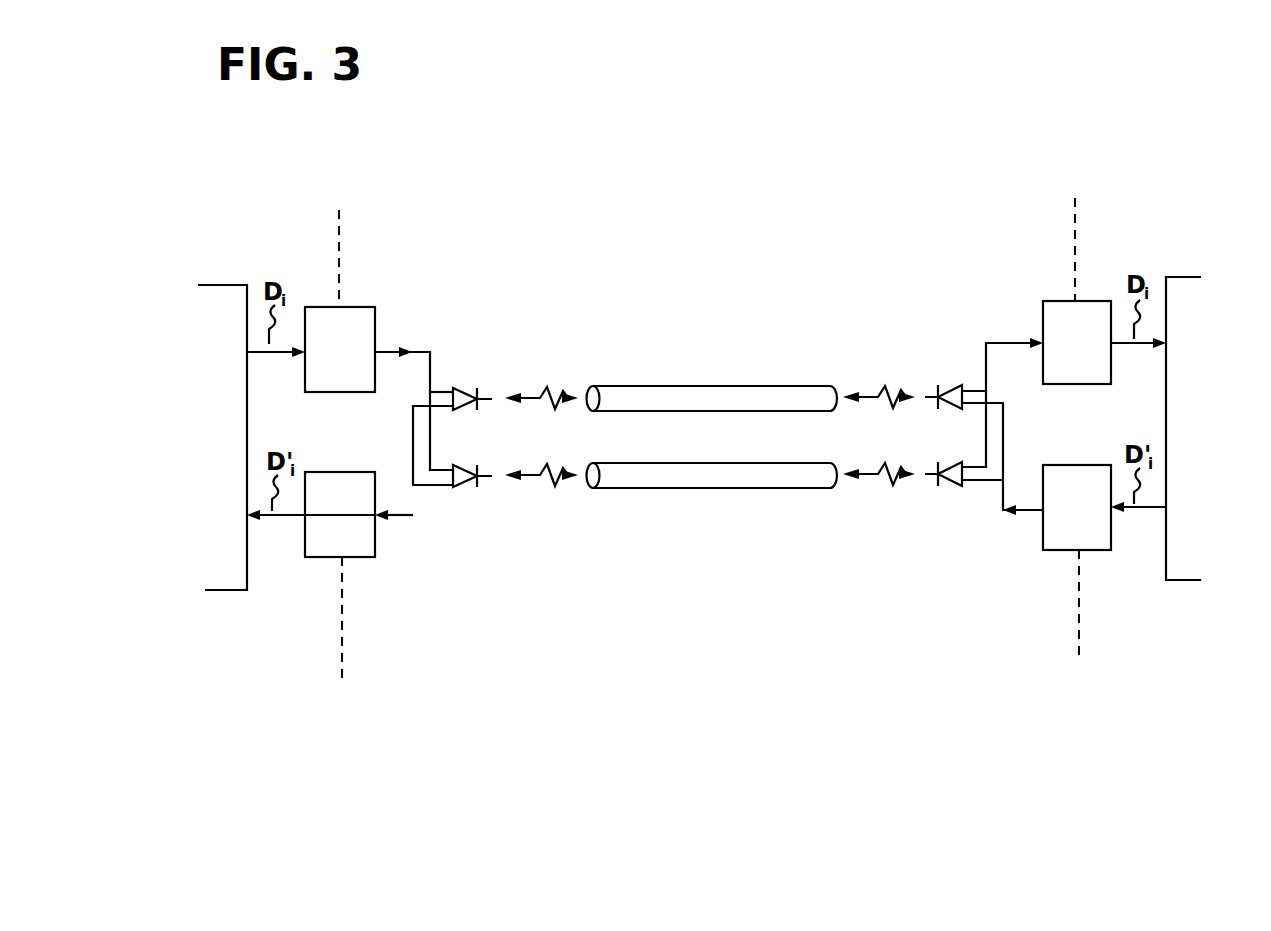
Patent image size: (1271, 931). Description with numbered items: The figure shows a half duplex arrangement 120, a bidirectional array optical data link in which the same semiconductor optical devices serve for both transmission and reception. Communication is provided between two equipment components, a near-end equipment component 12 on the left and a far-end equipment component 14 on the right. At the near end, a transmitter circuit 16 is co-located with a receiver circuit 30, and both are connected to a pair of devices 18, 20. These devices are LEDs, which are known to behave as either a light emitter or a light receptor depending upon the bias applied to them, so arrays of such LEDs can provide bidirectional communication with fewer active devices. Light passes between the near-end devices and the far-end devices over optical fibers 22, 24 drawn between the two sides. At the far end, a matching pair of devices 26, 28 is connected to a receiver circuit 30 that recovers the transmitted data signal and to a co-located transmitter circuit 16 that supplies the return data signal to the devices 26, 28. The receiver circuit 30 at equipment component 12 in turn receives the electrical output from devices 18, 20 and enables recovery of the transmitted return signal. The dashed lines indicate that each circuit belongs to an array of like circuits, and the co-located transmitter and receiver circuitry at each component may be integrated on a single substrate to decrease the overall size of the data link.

The equipment component 12 is at (219, 437).
The equipment component 14 is at (1194, 428).
The transmitter circuit 16 is at (708, 428).
The semiconductor optical device 18 is at (462, 386).
The semiconductor optical device 20 is at (466, 489).
The optical fiber 22 is at (677, 386).
The optical fiber 24 is at (688, 488).
The semiconductor optical device 26 is at (952, 382).
The semiconductor optical device 28 is at (948, 487).
The receiver circuit 30 is at (708, 429).
The half duplex arrangement 120 is at (757, 637).